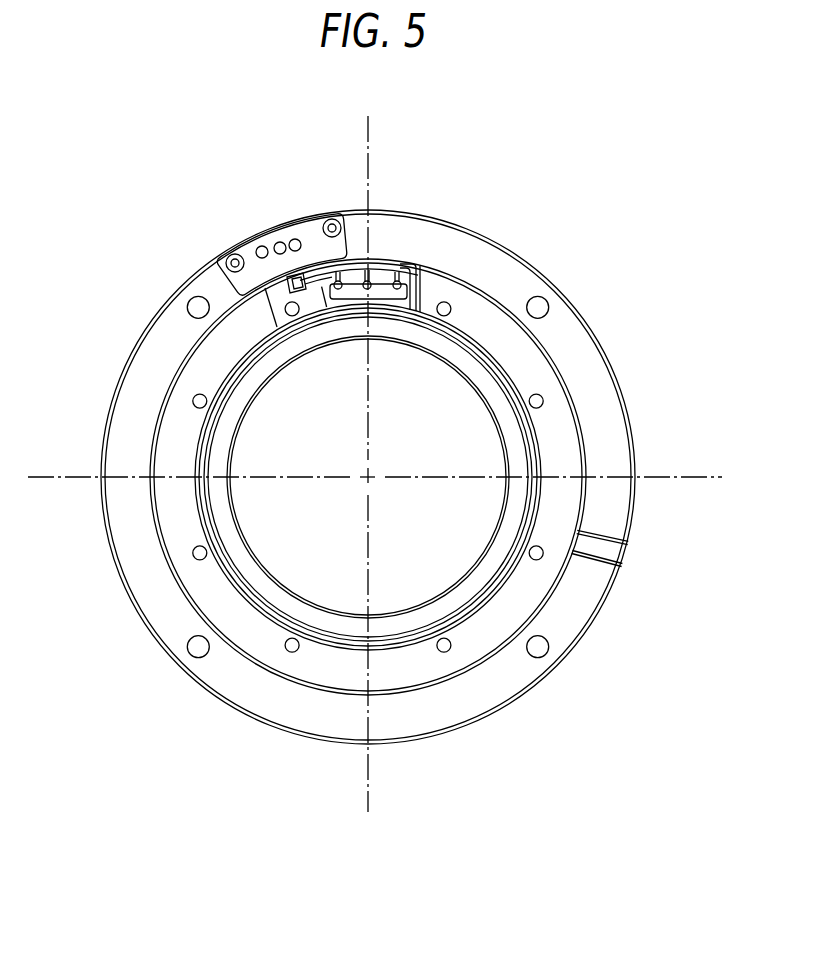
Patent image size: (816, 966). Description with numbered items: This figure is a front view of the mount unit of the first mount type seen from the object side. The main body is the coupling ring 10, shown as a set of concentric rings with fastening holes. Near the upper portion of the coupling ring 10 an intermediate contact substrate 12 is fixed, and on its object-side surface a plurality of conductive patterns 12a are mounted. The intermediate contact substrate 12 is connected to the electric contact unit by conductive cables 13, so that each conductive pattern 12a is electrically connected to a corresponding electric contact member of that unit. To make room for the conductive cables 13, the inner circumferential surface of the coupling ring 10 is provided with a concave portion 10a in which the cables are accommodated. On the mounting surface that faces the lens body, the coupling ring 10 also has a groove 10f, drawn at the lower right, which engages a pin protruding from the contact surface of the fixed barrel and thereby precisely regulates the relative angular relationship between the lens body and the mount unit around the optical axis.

The coupling ring 10 is at (507, 262).
The concave portion 10a is at (266, 315).
The groove 10f is at (597, 560).
The intermediate contact substrate 12 is at (312, 232).
The conductive pattern 12a is at (267, 248).
The conductive cable 13 is at (367, 256).